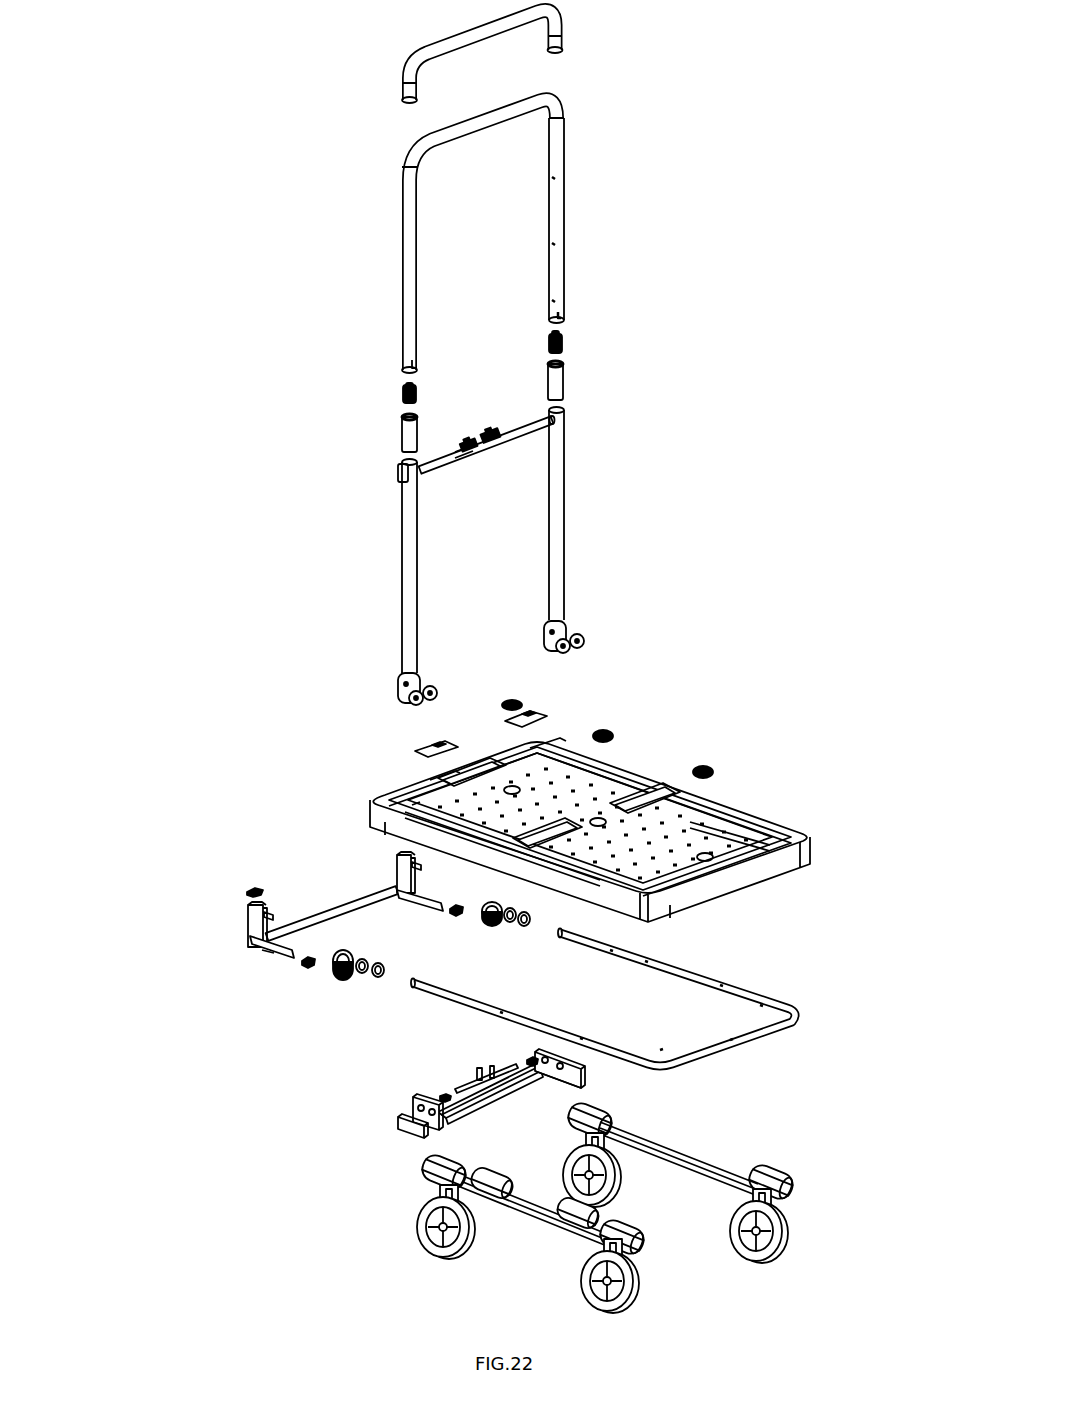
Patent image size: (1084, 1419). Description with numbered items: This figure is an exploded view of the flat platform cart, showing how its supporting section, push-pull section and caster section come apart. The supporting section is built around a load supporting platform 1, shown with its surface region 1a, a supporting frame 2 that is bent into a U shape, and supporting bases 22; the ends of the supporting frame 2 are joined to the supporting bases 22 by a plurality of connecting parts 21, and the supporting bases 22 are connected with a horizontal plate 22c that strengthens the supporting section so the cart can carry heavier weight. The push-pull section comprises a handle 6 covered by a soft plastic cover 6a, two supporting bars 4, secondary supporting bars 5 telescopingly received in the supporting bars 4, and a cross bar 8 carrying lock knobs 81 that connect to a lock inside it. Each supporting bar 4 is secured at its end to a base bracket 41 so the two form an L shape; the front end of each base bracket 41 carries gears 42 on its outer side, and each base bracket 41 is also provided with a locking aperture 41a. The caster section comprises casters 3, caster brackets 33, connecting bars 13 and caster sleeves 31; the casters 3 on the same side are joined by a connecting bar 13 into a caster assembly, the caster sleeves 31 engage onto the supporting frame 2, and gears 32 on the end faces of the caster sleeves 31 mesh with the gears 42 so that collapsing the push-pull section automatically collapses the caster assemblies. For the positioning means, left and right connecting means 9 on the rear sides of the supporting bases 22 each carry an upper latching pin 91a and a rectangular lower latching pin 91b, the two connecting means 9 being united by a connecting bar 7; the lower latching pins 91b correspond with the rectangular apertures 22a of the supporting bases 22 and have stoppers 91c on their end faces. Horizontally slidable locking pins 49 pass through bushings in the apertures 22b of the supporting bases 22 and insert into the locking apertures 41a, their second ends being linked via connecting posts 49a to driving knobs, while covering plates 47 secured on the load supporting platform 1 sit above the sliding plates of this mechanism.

The soft plastic cover 6a is at (556, 20).
The handle 6 is at (553, 105).
The secondary supporting bar 5 is at (560, 215).
The supporting bar 4 is at (560, 498).
The cross bar 8 is at (547, 428).
The lock knob 81 is at (493, 433).
The base bracket 41 is at (567, 622).
The gear 42 is at (583, 643).
The locking aperture 41a is at (402, 692).
The covering plate 47 is at (543, 715).
The load supporting platform 1 is at (603, 795).
The platform rail 1a is at (743, 820).
The connecting bar 7 is at (347, 908).
The connecting means 9 is at (248, 933).
The upper latching pin 91a is at (252, 908).
The lower latching pin 91b is at (277, 957).
The stopper 91c is at (305, 968).
The connecting part 21 is at (347, 970).
The supporting frame 2 is at (767, 1002).
The supporting base 22 is at (403, 1118).
The rectangular aperture 22a is at (420, 1137).
The aperture 22b is at (415, 1102).
The horizontal plate 22c is at (500, 1092).
The locking pin 49 is at (467, 1083).
The connecting post 49a is at (478, 1073).
The connecting bar 13 is at (530, 1212).
The caster 3 is at (406, 1225).
The caster sleeve 31 is at (430, 1183).
The gear 32 is at (427, 1158).
The caster bracket 33 is at (427, 1250).